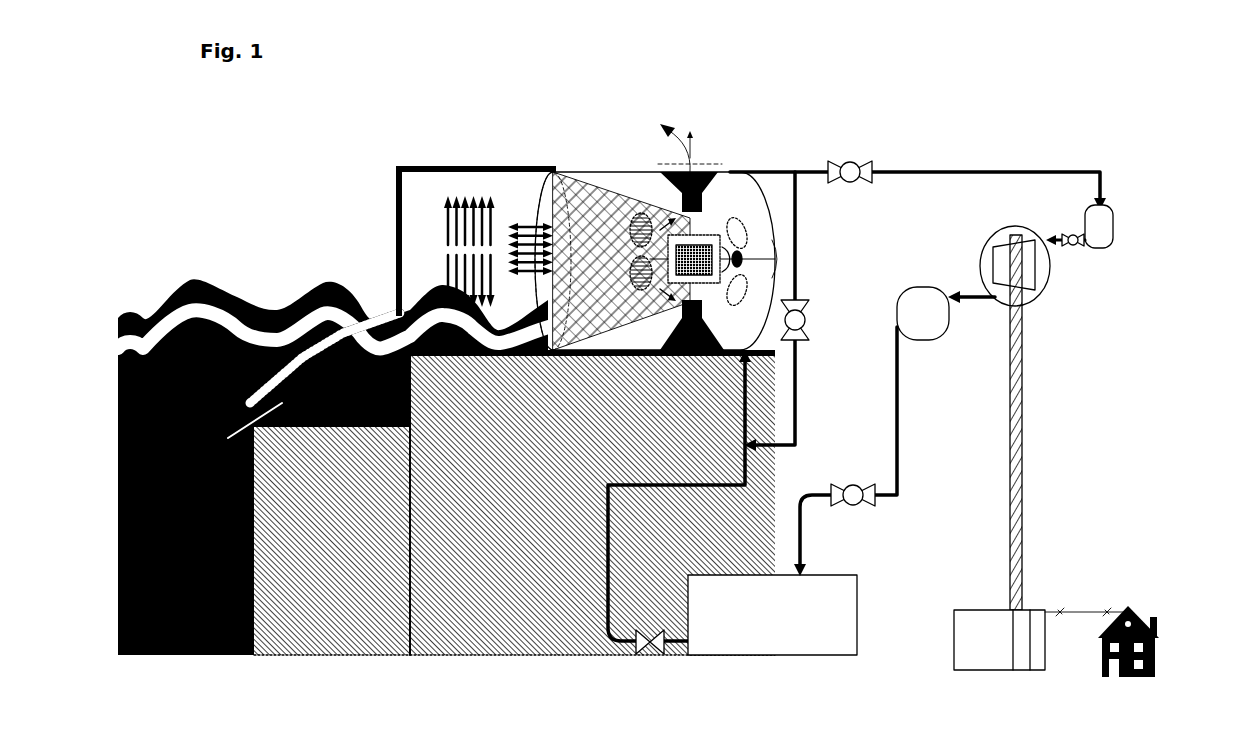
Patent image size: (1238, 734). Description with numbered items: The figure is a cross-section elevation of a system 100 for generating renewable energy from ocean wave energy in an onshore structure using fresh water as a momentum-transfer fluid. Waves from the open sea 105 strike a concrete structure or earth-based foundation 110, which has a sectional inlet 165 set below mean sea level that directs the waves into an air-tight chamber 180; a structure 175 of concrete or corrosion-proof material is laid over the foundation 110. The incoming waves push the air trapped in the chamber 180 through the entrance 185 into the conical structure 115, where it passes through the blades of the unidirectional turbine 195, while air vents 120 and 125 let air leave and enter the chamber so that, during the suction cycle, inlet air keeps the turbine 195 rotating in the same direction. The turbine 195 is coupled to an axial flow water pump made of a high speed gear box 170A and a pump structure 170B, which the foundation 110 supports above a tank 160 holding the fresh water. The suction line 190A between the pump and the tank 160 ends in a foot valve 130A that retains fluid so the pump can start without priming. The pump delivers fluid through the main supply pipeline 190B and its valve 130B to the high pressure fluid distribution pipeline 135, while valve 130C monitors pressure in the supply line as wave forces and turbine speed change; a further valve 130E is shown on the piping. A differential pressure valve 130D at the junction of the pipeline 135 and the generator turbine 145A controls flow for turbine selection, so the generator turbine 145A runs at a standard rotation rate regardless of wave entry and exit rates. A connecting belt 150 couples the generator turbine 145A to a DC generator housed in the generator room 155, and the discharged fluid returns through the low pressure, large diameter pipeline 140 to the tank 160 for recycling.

The system 100 is at (1099, 51).
The open sea 105 is at (335, 467).
The concrete structure or earth-based foundation 110 is at (514, 502).
The conical structure 115 is at (574, 172).
The air vent 120 is at (676, 135).
The air vent 125 is at (680, 392).
The foot valve 130A is at (637, 634).
The valve 130B is at (870, 160).
The valve 130C is at (797, 300).
The differential pressure valve 130D is at (1073, 242).
The valve 130E is at (847, 505).
The fluid distribution pipeline 135 is at (1110, 212).
The low pressure pipeline 140 is at (923, 287).
The generator turbine 145A is at (1031, 228).
The connecting belt 150 is at (1019, 592).
The generator room 155 is at (1056, 641).
The tank 160 is at (772, 615).
The sectional inlet 165 is at (276, 396).
The high speed gear box 170A is at (707, 228).
The pump structure 170B is at (748, 237).
The structure 175 is at (396, 207).
The air-tight chamber 180 is at (433, 267).
The entrance 185 is at (533, 225).
The suction line 190A is at (750, 390).
The main supply pipeline 190B is at (955, 165).
The unidirectional turbine 195 is at (627, 307).